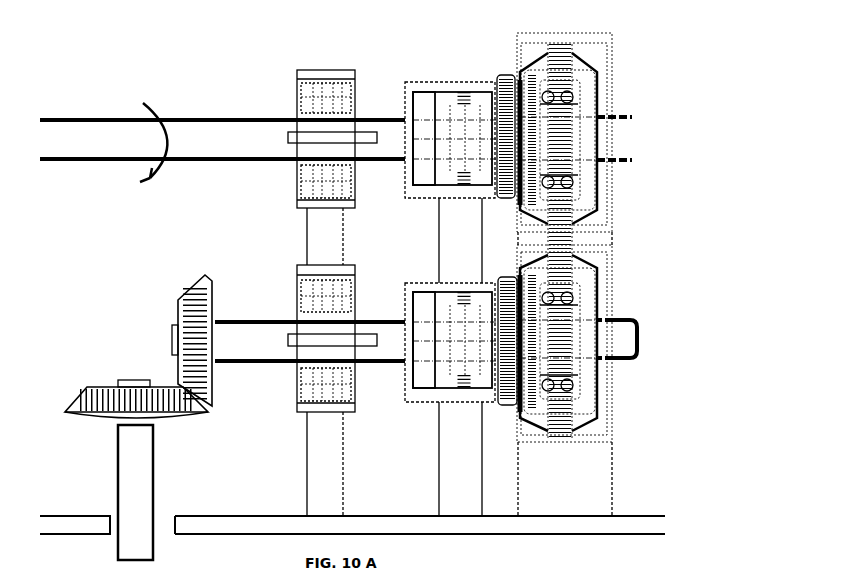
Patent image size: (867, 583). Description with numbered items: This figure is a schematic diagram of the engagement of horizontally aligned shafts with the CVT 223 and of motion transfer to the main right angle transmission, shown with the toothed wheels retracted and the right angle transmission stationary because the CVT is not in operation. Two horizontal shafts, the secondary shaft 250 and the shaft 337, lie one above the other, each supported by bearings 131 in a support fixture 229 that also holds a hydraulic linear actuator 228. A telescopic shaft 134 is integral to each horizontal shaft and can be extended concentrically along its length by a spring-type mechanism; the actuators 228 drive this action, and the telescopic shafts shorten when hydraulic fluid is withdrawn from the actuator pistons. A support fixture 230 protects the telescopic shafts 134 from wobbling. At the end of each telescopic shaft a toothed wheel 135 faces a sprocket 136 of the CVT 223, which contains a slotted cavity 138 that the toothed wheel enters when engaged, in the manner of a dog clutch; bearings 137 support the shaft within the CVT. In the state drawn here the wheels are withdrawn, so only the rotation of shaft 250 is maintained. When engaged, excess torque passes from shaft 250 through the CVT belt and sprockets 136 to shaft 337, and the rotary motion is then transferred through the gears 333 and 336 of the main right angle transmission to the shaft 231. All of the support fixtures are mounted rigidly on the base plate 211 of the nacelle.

The hydraulic linear actuator 228 is at (290, 338).
The support fixture 229 is at (343, 72).
The secondary shaft 250 is at (380, 118).
The bearing 131 is at (297, 295).
The shaft 337 is at (385, 320).
The support fixture 230 is at (437, 223).
The telescopic shaft 134 is at (470, 82).
The toothed wheel 135 is at (505, 75).
The sprocket 136 is at (585, 292).
The CVT/constant speed drive 223 is at (600, 58).
The bearing 137 is at (577, 92).
The slotted cavity 138 is at (530, 72).
The gear 336 is at (213, 398).
The gear 333 is at (183, 425).
The shaft 231 is at (150, 478).
The base plate 211 is at (633, 520).